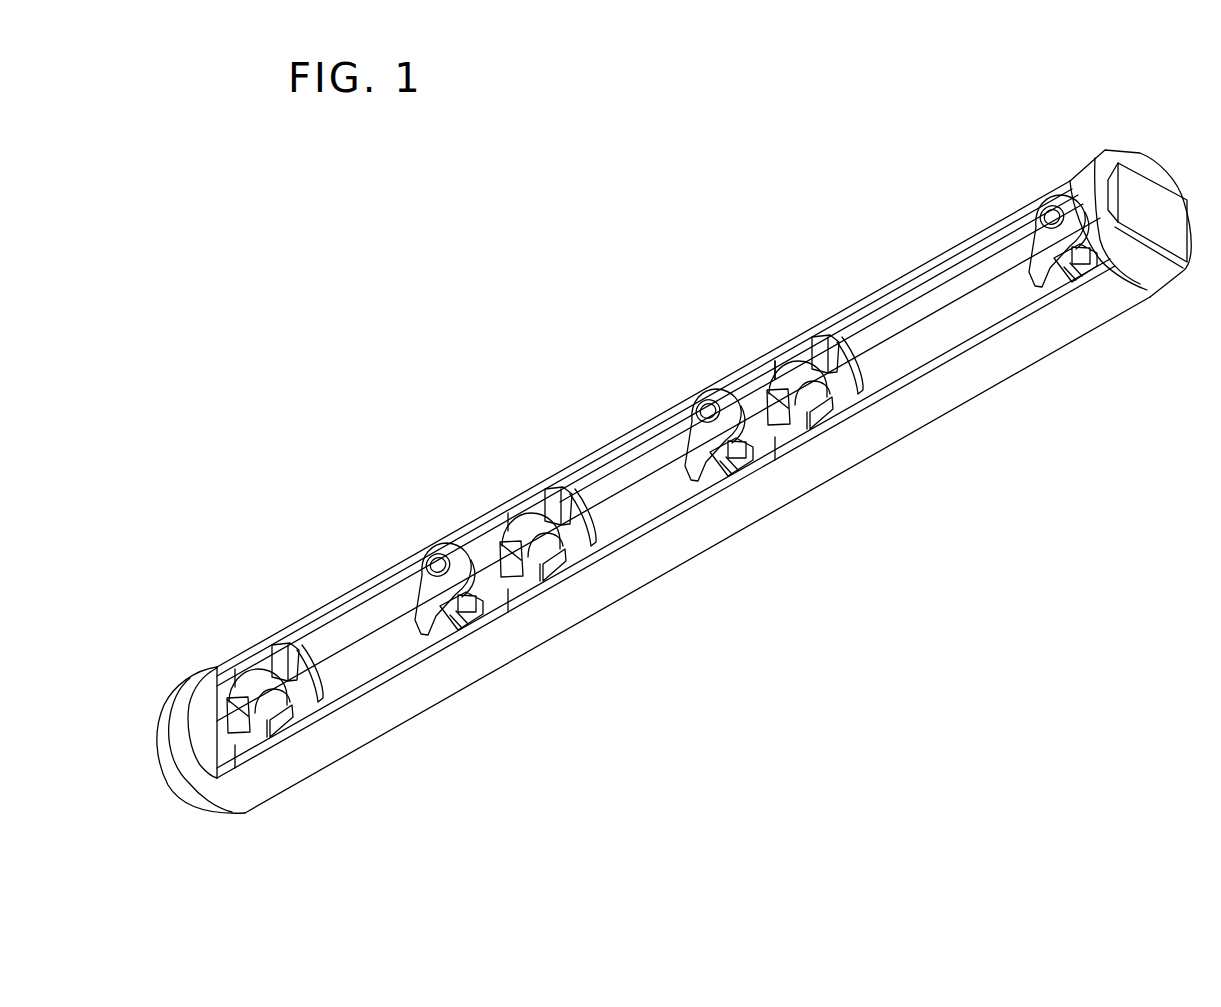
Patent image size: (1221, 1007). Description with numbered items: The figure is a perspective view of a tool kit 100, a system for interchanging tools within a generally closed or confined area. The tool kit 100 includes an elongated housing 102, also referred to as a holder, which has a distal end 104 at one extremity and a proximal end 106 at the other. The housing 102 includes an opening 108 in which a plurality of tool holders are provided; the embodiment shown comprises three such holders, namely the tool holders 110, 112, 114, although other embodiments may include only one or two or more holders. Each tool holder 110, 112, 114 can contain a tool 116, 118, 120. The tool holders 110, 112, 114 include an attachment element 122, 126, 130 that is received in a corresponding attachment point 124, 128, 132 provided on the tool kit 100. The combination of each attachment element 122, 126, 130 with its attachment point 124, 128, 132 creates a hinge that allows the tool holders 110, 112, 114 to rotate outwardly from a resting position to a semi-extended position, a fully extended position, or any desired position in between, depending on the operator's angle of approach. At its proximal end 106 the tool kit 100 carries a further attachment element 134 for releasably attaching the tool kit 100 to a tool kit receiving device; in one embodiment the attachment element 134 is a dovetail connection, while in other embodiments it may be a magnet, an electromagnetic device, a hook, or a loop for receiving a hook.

The tool kit 100 is at (456, 338).
The housing 102 is at (347, 757).
The distal end 104 is at (233, 830).
The proximal end 106 is at (1197, 282).
The opening 108 is at (793, 343).
The tool holder 110 is at (370, 617).
The tool holder 112 is at (626, 465).
The tool holder 114 is at (934, 300).
The tool 116 is at (457, 600).
The tool 118 is at (703, 490).
The tool 120 is at (1045, 300).
The attachment element 122 is at (258, 708).
The attachment point 124 is at (255, 668).
The attachment element 126 is at (535, 540).
The attachment point 128 is at (537, 470).
The attachment element 130 is at (797, 390).
The attachment point 132 is at (800, 345).
The attachment element 134 is at (1132, 183).